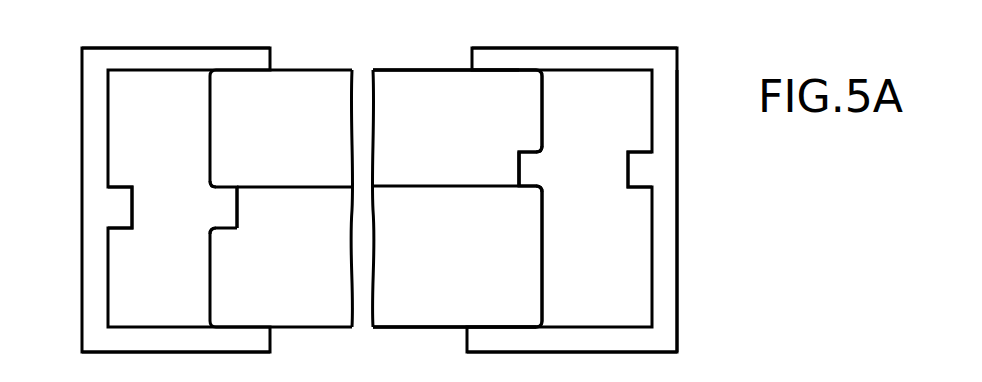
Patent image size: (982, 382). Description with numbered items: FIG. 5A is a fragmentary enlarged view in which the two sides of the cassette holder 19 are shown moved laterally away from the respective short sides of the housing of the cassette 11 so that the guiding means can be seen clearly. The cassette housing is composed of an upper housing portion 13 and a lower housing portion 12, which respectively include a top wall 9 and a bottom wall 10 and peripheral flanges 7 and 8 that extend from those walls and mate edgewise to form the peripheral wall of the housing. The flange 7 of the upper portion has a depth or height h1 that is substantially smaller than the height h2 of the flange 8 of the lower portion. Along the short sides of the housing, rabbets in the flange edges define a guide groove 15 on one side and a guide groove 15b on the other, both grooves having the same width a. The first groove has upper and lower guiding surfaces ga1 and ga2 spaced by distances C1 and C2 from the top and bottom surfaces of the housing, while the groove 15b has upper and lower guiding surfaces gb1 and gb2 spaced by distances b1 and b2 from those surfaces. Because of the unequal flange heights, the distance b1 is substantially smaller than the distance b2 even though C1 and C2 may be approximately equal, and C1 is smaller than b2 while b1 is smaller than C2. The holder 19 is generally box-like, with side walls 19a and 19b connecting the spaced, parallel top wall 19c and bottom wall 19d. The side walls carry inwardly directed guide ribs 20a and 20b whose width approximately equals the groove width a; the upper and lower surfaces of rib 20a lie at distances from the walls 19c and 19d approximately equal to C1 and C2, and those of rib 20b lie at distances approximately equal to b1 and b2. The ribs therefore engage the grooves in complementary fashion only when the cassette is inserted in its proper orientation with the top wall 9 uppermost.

The peripheral flange of upper housing portion 7 is at (438, 96).
The peripheral flange of lower housing portion 8 is at (403, 308).
The top wall 9 is at (324, 68).
The bottom wall 10 is at (328, 330).
The cassette 11 is at (384, 64).
The lower housing portion 12 is at (432, 306).
The upper housing portion 13 is at (396, 100).
The guide groove 15 is at (214, 210).
The guide groove 15b is at (539, 177).
The cassette holder 19 is at (657, 44).
The side wall of cassette holder 19a is at (97, 277).
The side wall of cassette holder 19b is at (740, 306).
The top wall of cassette holder 19c is at (222, 54).
The bottom wall of cassette holder 19d is at (188, 345).
The guide rib 20a is at (157, 186).
The guide rib 20b is at (638, 174).
The upper guiding surface of guide groove 15a ga1 is at (215, 189).
The lower guiding surface of guide groove 15a ga2 is at (218, 228).
The upper guiding surface of guide groove 15b gb1 is at (535, 152).
The lower guiding surface of guide groove 15b gb2 is at (531, 184).
The groove width a is at (175, 163).
The distance from upper guiding surface gb1 to top surface b1 is at (495, 73).
The distance from lower guiding surface gb2 to bottom surface b2 is at (495, 189).
The distance from upper guiding surface ga1 to top surface C1 is at (237, 73).
The distance from lower guiding surface ga2 to bottom surface C2 is at (248, 231).
The height of flange 7 h1 is at (298, 73).
The height of flange 8 h2 is at (298, 190).